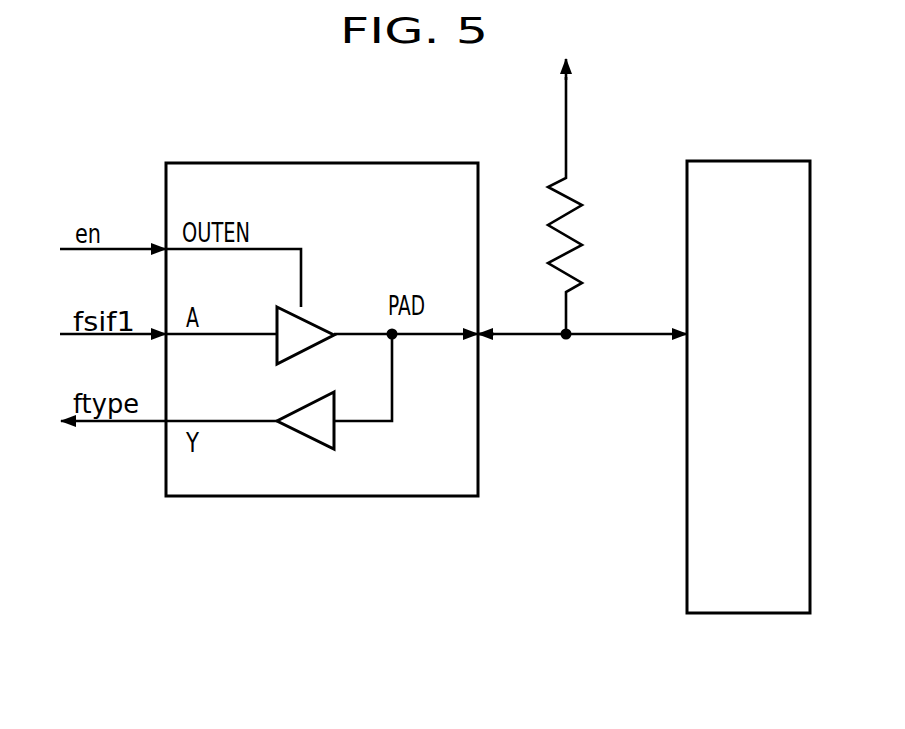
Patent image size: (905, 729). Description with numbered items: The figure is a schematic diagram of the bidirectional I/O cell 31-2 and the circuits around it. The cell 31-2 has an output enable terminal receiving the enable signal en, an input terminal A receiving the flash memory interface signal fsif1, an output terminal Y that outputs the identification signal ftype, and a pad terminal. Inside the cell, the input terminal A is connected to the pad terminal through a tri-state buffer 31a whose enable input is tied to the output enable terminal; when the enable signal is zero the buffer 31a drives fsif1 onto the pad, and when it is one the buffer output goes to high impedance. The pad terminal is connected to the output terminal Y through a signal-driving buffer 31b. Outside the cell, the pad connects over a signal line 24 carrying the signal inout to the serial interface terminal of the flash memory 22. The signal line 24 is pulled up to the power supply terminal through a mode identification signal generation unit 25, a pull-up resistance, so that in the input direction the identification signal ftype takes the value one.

The bidirectional I/O cell 31-2 is at (299, 163).
The tri-state buffer 31a is at (312, 348).
The signal-driving buffer 31b is at (336, 438).
The signal line 24 is at (595, 333).
The mode identification signal generation unit 25 is at (579, 203).
The flash memory 22 is at (709, 161).